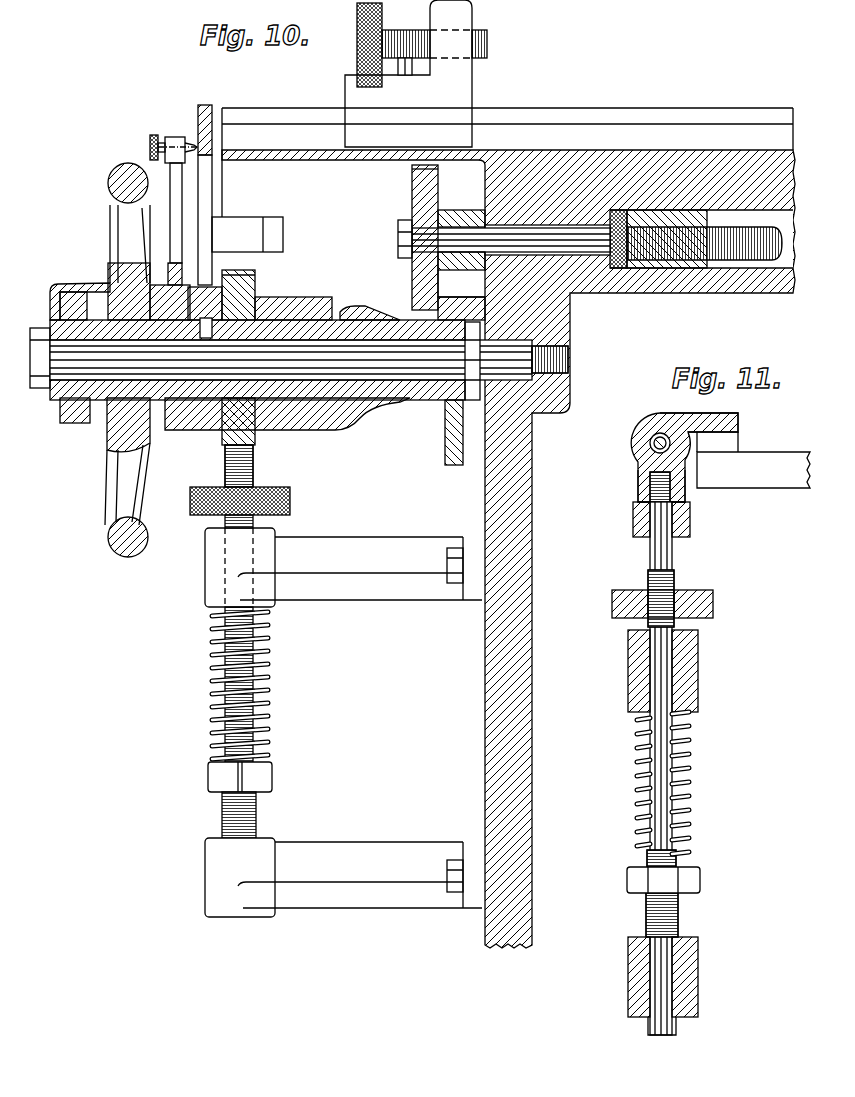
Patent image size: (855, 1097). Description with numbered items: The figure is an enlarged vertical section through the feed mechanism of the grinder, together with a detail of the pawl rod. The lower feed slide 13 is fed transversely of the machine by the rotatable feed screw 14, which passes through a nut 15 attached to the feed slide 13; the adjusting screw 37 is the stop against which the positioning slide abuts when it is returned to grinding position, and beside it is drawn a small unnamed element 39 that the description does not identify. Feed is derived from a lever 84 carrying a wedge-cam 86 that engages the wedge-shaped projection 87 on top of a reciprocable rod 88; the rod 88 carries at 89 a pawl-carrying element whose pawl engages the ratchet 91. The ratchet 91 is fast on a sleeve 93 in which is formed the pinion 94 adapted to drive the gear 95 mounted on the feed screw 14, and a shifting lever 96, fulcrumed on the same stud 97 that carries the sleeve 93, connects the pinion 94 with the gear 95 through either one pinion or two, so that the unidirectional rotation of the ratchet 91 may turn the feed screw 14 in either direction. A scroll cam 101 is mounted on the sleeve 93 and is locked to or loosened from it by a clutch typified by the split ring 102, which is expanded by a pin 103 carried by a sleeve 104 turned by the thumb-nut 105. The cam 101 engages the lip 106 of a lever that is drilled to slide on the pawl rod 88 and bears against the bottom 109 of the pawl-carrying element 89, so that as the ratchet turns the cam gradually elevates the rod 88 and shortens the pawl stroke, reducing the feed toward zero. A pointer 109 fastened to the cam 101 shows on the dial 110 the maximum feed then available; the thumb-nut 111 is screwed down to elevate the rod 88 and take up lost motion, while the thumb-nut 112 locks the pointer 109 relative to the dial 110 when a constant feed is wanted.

In FIG. 10, the feed slide 13 is at (631, 164).
In FIG. 10, the feed screw 14 is at (745, 262).
In FIG. 10, the nut 15 is at (668, 268).
In FIG. 10, the adjusting screw 37 is at (402, 37).
In FIG. 10, the set screw 39 is at (412, 67).
In FIG. 11, the lever 84 is at (767, 476).
In FIG. 11, the wedge-cam 86 is at (732, 444).
In FIG. 11, the wedge-shaped projection 87 is at (748, 408).
In FIG. 11, the reciprocable rod 88 is at (658, 550).
In FIG. 11, the pawl-carrying element 89 is at (642, 429).
In FIG. 10, the ratchet 91 is at (240, 272).
In FIG. 10, the sleeve 93 is at (349, 306).
In FIG. 10, the pinion 94 is at (405, 326).
In FIG. 10, the gear 95 is at (412, 187).
In FIG. 10, the lever 96 is at (452, 440).
In FIG. 10, the stud 97 is at (78, 360).
In FIG. 10, the cam 101 is at (167, 281).
In FIG. 10, the split ring 102 is at (200, 403).
In FIG. 10, the pin 103 is at (213, 322).
In FIG. 10, the sleeve 104 is at (147, 383).
In FIG. 10, the thumb-nut 105 is at (66, 314).
In FIG. 10, the lip 106 is at (211, 438).
In FIG. 10, the pointer 109 is at (170, 197).
In FIG. 11, the pointer 109 is at (639, 490).
In FIG. 10, the dial 110 is at (199, 111).
In FIG. 10, the thumb-nut 111 is at (291, 500).
In FIG. 11, the thumb-nut 111 is at (612, 607).
In FIG. 10, the thumb-nut 112 is at (150, 144).